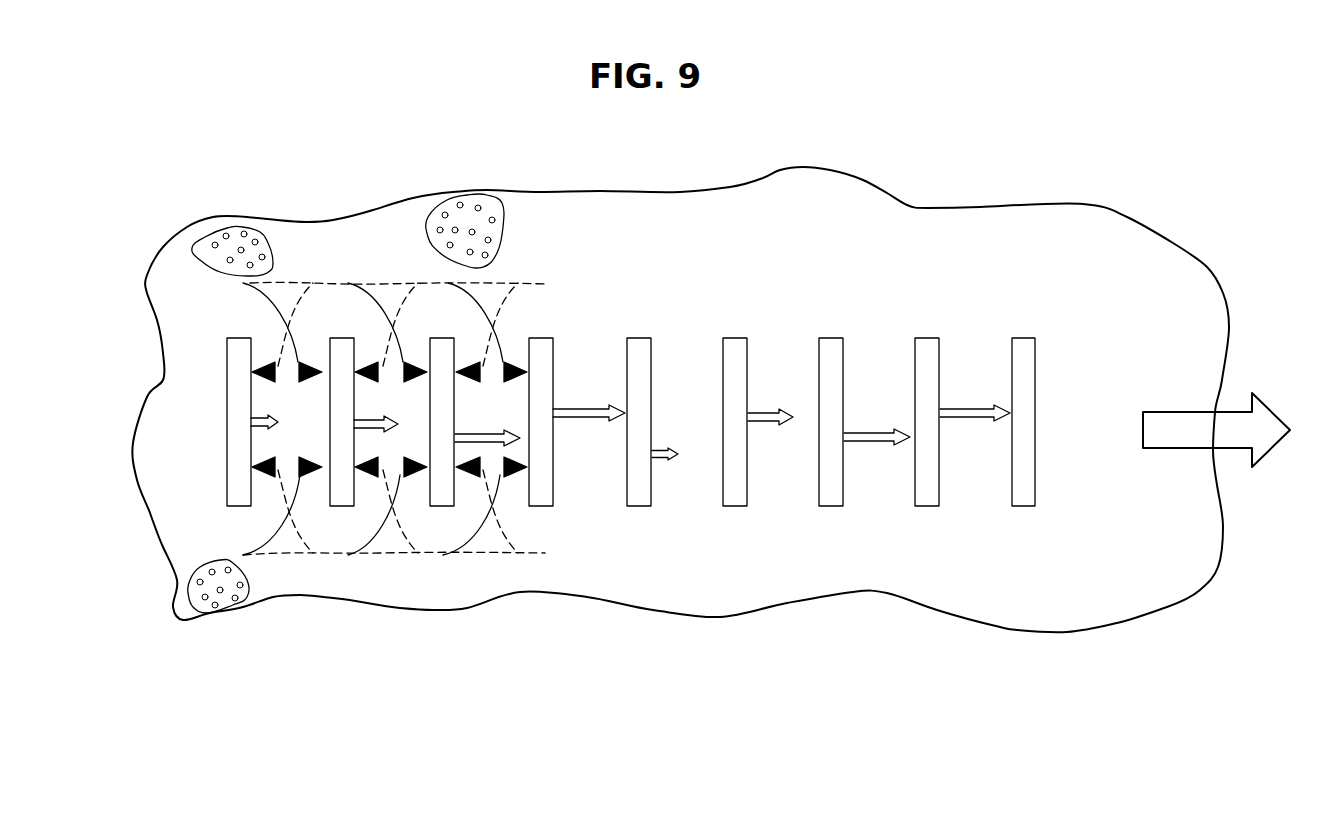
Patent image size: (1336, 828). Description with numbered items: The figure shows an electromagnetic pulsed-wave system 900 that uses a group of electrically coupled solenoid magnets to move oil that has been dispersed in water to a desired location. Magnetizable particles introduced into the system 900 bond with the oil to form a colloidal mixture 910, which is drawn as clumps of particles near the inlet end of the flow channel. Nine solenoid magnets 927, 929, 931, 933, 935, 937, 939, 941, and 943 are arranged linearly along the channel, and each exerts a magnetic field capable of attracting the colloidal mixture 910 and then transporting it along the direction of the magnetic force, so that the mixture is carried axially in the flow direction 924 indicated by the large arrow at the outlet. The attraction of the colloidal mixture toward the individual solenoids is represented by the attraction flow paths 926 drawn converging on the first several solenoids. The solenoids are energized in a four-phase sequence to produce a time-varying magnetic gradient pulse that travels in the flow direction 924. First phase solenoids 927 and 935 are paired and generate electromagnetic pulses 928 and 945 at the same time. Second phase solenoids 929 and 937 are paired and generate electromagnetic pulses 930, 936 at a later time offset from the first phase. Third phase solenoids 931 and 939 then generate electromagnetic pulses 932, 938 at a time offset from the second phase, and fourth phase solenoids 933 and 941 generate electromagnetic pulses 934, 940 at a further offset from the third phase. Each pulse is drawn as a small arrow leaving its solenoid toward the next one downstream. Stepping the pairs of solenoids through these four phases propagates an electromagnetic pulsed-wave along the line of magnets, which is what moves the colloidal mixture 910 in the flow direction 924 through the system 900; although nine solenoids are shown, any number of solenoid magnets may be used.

The electromagnetic pulsed-wave system 900 is at (1103, 178).
The colloidal mixture 910 is at (233, 223).
The flow direction 924 is at (1170, 423).
The attraction flow paths 926 is at (299, 362).
The first phase solenoid 927 is at (227, 493).
The electromagnetic pulse 928 is at (263, 416).
The second phase solenoid 929 is at (347, 493).
The electromagnetic pulse 930 is at (345, 374).
The third phase solenoid 931 is at (443, 500).
The electromagnetic pulse 932 is at (490, 447).
The fourth phase solenoid 933 is at (540, 360).
The electromagnetic pulse 934 is at (585, 409).
The first phase solenoid 935 is at (637, 505).
The electromagnetic pulse 936 is at (785, 426).
The second phase solenoid 937 is at (737, 350).
The electromagnetic pulse 938 is at (878, 446).
The third phase solenoid 939 is at (830, 505).
The electromagnetic pulse 940 is at (975, 400).
The fourth phase solenoid 941 is at (928, 510).
The solenoid magnet 943 is at (1025, 505).
The electromagnetic pulse 945 is at (665, 460).